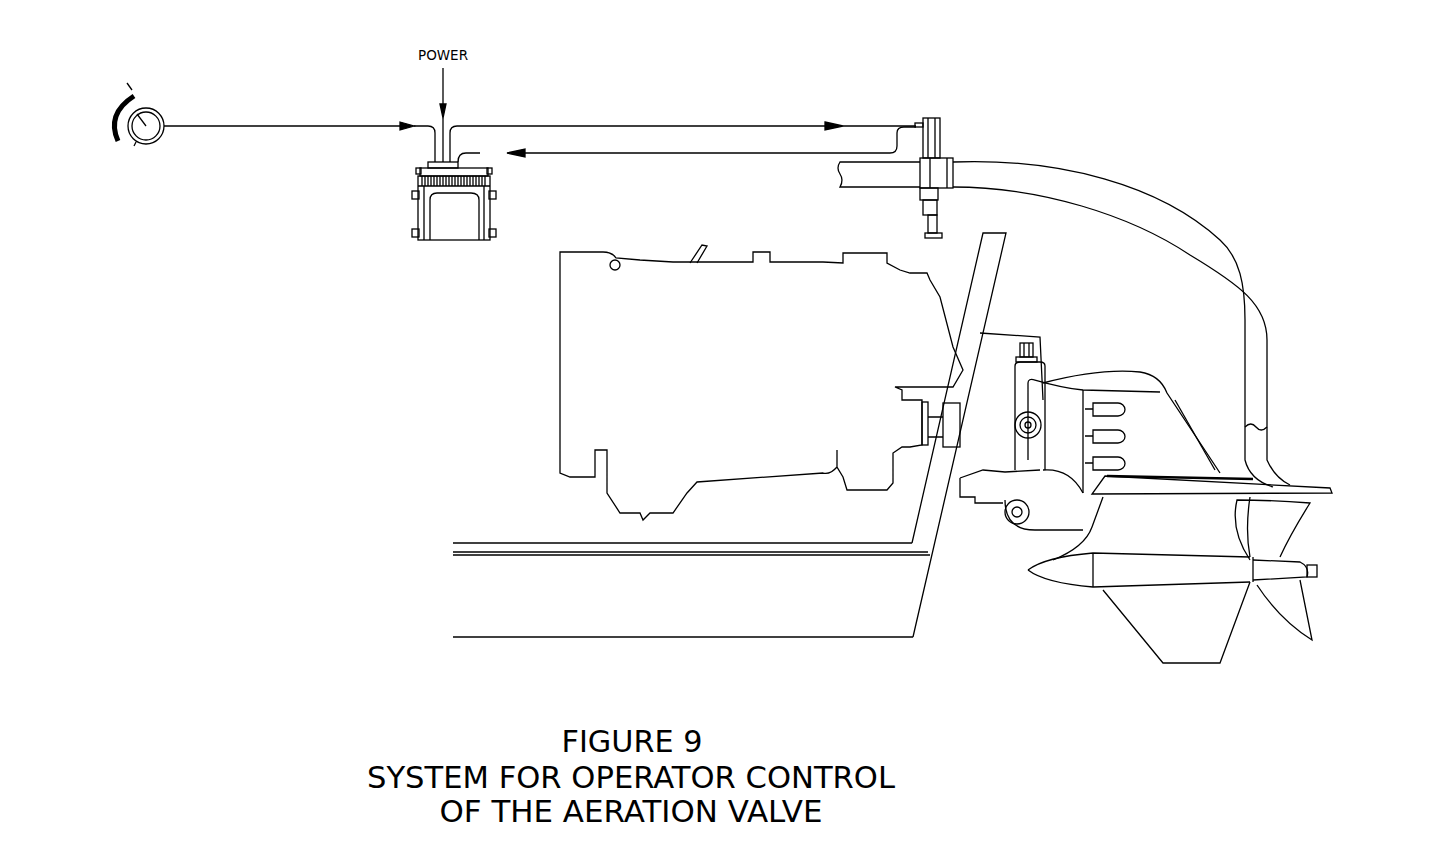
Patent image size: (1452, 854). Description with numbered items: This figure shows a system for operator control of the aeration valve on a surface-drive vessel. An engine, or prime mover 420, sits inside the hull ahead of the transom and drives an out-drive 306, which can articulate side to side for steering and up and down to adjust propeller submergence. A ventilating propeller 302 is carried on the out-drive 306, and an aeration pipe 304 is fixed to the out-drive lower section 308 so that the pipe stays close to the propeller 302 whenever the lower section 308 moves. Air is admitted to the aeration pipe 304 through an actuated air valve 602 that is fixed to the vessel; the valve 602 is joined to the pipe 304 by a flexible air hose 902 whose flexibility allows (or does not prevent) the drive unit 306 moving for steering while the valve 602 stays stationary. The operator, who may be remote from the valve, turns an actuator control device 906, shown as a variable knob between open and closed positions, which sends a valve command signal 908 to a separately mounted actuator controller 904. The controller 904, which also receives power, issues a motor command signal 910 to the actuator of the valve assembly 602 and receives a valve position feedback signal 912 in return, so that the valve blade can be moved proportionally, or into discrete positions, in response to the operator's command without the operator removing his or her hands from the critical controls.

The actuator control device 906 is at (132, 161).
The valve command signal 908 is at (299, 151).
The actuator controller 904 is at (453, 226).
The motor command signal 910 is at (683, 134).
The valve position feedback signal 912 is at (687, 159).
The actuated air valve 602 is at (902, 154).
The flexible hose 902 is at (1120, 193).
The aeration pipe 304 is at (1270, 440).
The engine (prime mover) 420 is at (761, 382).
The out-drive 306 is at (1267, 360).
The lower drive section 308 is at (1172, 632).
The ventilating propeller 302 is at (1300, 613).